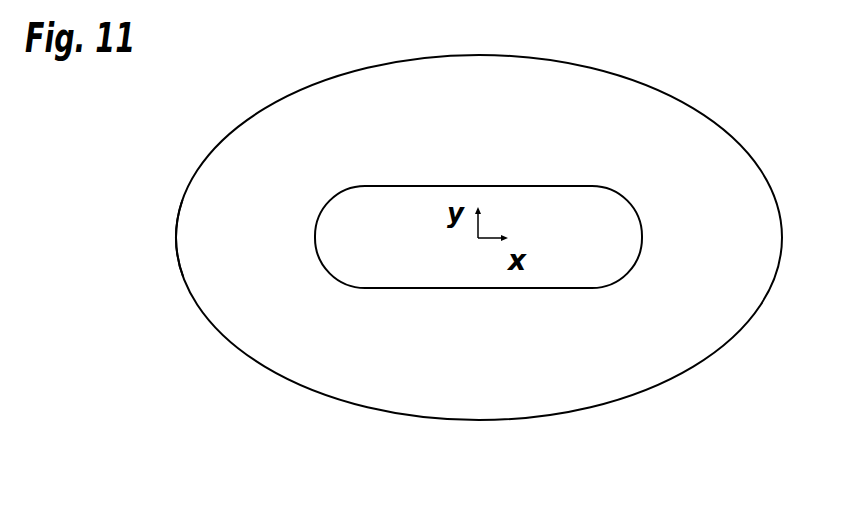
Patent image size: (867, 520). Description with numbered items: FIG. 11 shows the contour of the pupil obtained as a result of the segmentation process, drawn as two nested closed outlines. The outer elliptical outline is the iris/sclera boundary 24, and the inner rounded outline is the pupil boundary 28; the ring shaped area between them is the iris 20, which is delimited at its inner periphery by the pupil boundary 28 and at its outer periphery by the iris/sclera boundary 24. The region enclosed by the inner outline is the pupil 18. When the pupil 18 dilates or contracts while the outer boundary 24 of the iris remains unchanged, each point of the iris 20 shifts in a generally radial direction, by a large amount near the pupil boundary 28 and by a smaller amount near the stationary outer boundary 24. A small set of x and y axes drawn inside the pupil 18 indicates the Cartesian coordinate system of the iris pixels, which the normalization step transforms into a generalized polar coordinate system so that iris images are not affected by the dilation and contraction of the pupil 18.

The pupil 18 is at (413, 253).
The iris 20 is at (697, 147).
The iris/sclera boundary 24 is at (177, 222).
The pupil boundary 28 is at (455, 187).